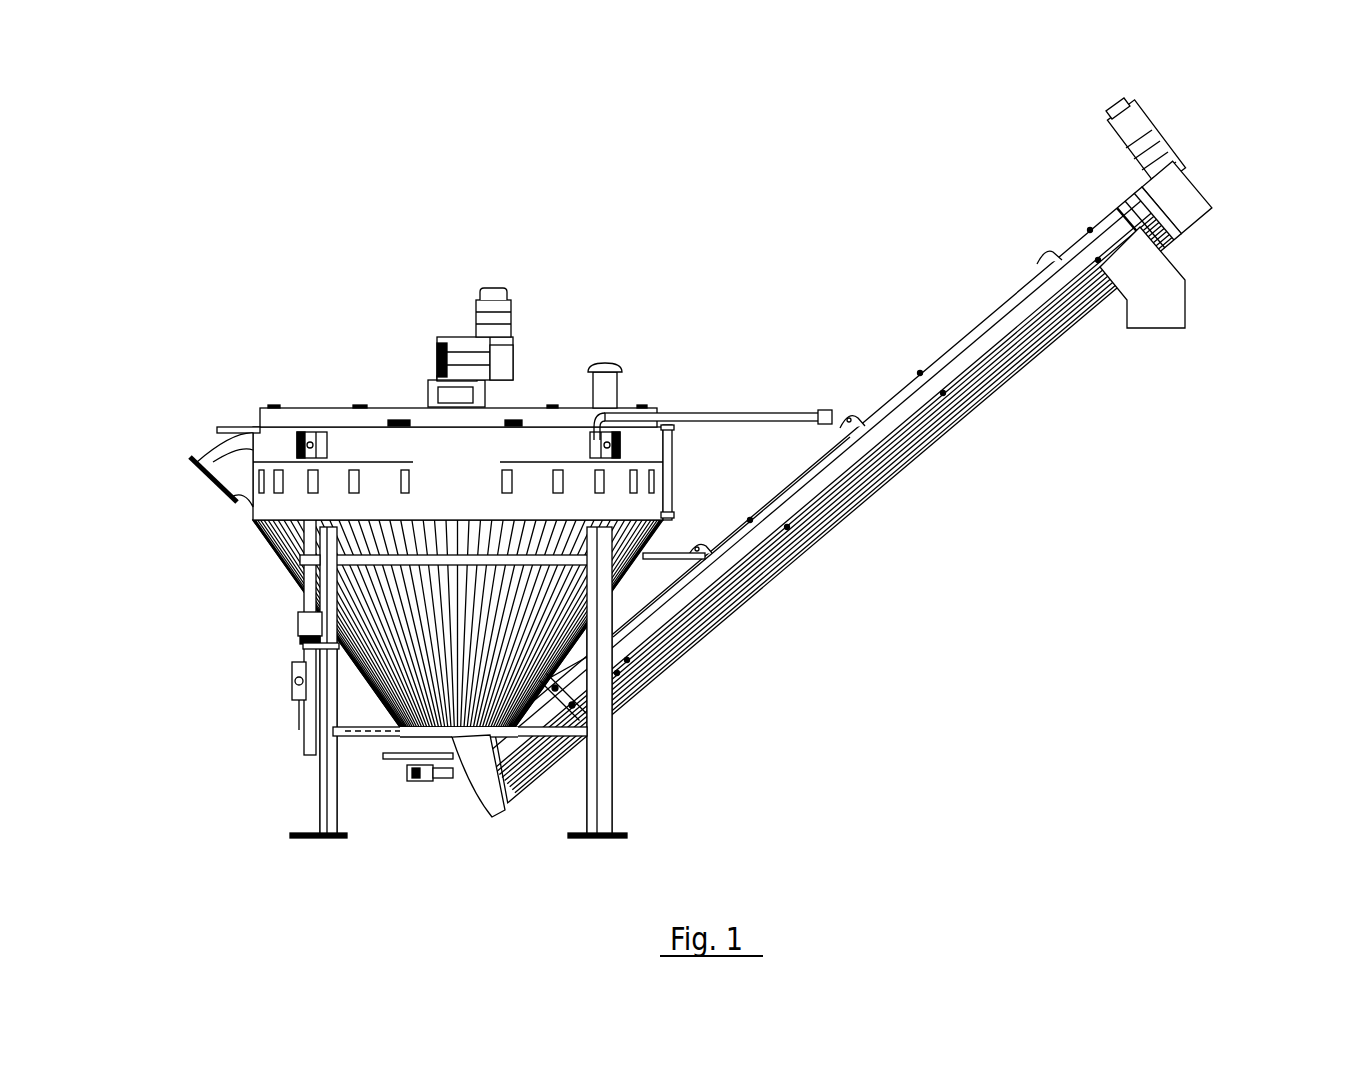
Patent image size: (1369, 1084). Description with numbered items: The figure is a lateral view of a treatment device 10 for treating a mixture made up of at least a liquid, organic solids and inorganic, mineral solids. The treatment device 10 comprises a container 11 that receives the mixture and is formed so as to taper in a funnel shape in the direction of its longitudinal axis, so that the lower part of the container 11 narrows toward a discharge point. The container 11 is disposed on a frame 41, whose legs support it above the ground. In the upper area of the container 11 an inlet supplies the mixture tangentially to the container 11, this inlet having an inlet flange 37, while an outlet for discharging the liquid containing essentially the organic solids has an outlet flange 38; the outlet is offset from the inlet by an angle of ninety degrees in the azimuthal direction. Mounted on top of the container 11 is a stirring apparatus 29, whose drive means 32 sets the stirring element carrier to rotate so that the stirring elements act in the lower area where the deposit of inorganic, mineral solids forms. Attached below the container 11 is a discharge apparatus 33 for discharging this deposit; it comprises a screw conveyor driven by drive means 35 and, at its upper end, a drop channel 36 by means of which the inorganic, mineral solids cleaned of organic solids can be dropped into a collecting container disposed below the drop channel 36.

The treatment device 10 is at (701, 436).
The container 11 is at (446, 476).
The stirring apparatus 29 is at (580, 260).
The drive means 32 is at (507, 317).
The discharge apparatus 33 is at (911, 436).
The drive means 35 is at (1163, 122).
The drop channel 36 is at (1165, 290).
The inlet flange 37 is at (232, 428).
The outlet flange 38 is at (233, 467).
The frame 41 is at (600, 758).